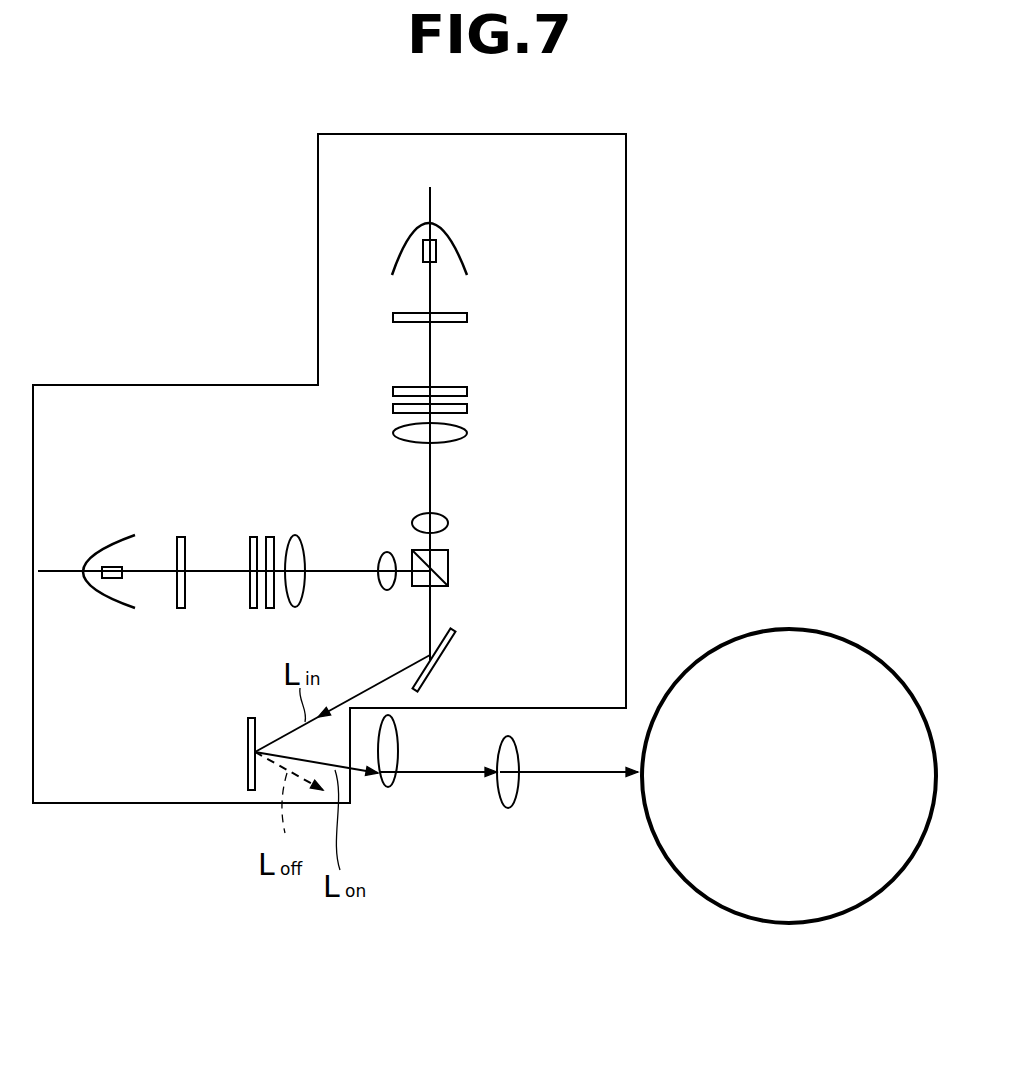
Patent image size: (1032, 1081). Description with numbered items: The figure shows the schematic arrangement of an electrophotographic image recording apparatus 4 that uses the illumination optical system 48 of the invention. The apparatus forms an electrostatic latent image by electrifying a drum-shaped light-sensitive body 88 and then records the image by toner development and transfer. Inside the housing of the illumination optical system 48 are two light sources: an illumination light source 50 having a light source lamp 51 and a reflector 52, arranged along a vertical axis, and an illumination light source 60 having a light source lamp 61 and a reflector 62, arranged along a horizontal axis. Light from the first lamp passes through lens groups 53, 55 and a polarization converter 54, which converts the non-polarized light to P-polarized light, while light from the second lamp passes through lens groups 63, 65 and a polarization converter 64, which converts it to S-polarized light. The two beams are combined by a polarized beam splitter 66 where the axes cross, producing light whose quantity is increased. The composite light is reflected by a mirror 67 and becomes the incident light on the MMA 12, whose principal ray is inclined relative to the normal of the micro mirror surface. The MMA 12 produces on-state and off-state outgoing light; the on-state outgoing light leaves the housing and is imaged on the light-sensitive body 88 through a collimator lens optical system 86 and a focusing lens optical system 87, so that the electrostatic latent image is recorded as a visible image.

The image recording apparatus 4 is at (437, 462).
The MMA 12 is at (248, 740).
The illumination optical system 48 is at (626, 242).
The illumination light source 50 is at (501, 218).
The light source lamp 51 is at (440, 247).
The reflector 52 is at (457, 258).
The lens group 53 is at (477, 308).
The polarization converter 54 is at (467, 408).
The lens group 55 is at (478, 425).
The illumination light source 60 is at (93, 513).
The light source lamp 61 is at (105, 567).
The reflector 62 is at (130, 535).
The lens group 63 is at (257, 536).
The polarization converter 64 is at (268, 537).
The lens group 65 is at (400, 529).
The polarized beam splitter 66 is at (452, 570).
The mirror 67 is at (443, 655).
The collimator lens optical system 86 is at (388, 787).
The focusing lens optical system 87 is at (508, 808).
The light-sensitive body 88 is at (828, 630).